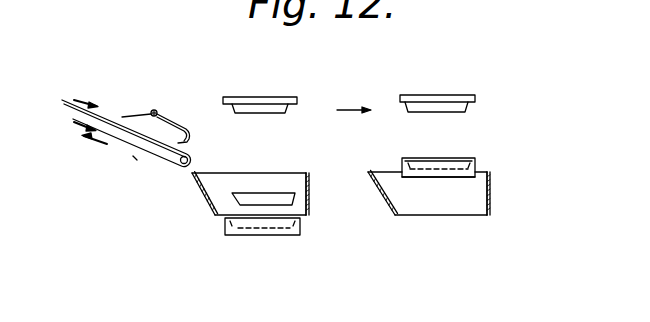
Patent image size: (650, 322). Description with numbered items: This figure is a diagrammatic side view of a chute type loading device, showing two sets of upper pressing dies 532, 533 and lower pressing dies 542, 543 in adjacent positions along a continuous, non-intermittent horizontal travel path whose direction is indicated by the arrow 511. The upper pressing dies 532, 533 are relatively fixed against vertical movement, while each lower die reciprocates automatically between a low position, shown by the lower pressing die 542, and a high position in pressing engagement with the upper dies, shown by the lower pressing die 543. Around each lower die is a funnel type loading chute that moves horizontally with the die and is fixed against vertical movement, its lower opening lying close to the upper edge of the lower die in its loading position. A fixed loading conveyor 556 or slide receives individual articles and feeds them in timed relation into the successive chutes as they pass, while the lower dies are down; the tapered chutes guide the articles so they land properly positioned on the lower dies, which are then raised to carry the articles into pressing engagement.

The arrow 511 is at (352, 109).
The upper pressing die 532 is at (273, 97).
The upper pressing die 533 is at (457, 95).
The lower pressing die 542 is at (281, 236).
The lower pressing die 543 is at (412, 178).
The loading conveyor 556 is at (120, 143).